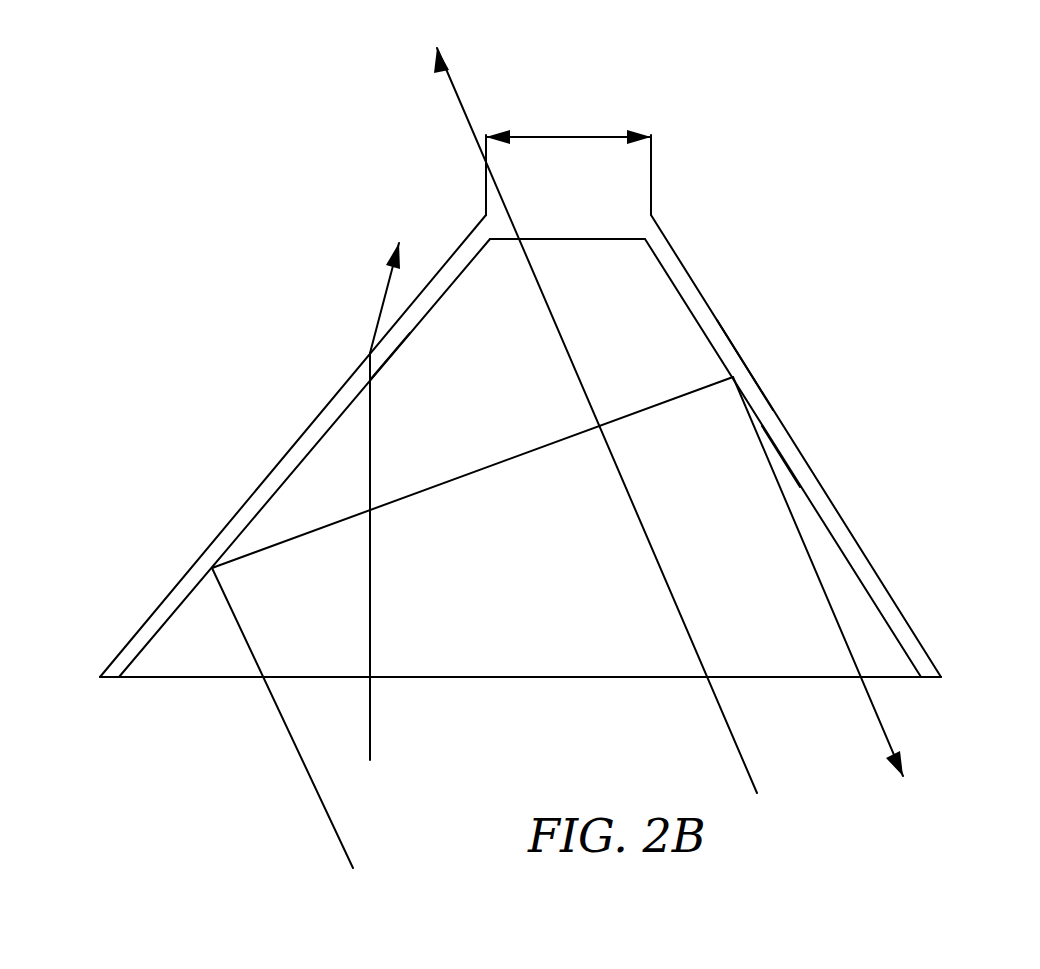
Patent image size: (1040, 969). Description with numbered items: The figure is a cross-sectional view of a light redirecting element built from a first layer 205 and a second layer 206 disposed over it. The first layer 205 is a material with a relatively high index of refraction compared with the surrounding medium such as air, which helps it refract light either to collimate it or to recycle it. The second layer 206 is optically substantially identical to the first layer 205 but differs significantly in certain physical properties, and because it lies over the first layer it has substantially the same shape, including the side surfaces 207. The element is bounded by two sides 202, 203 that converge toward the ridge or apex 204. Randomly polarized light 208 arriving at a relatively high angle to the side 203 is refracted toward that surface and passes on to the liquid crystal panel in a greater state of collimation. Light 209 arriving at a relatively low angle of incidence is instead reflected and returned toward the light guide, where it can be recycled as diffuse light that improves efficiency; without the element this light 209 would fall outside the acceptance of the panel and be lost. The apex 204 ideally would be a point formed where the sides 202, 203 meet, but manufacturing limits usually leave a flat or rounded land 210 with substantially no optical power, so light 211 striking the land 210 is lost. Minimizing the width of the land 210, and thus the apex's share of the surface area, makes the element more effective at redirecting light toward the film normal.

The side 202 is at (293, 450).
The side 203 is at (885, 587).
The ridge 204 is at (568, 225).
The first layer 205 is at (670, 311).
The second layer 206 is at (750, 382).
The side surfaces 207 is at (397, 347).
The randomly polarized light 208 is at (370, 652).
The light 209 is at (240, 625).
The land 210 is at (575, 135).
The light 211 is at (575, 363).